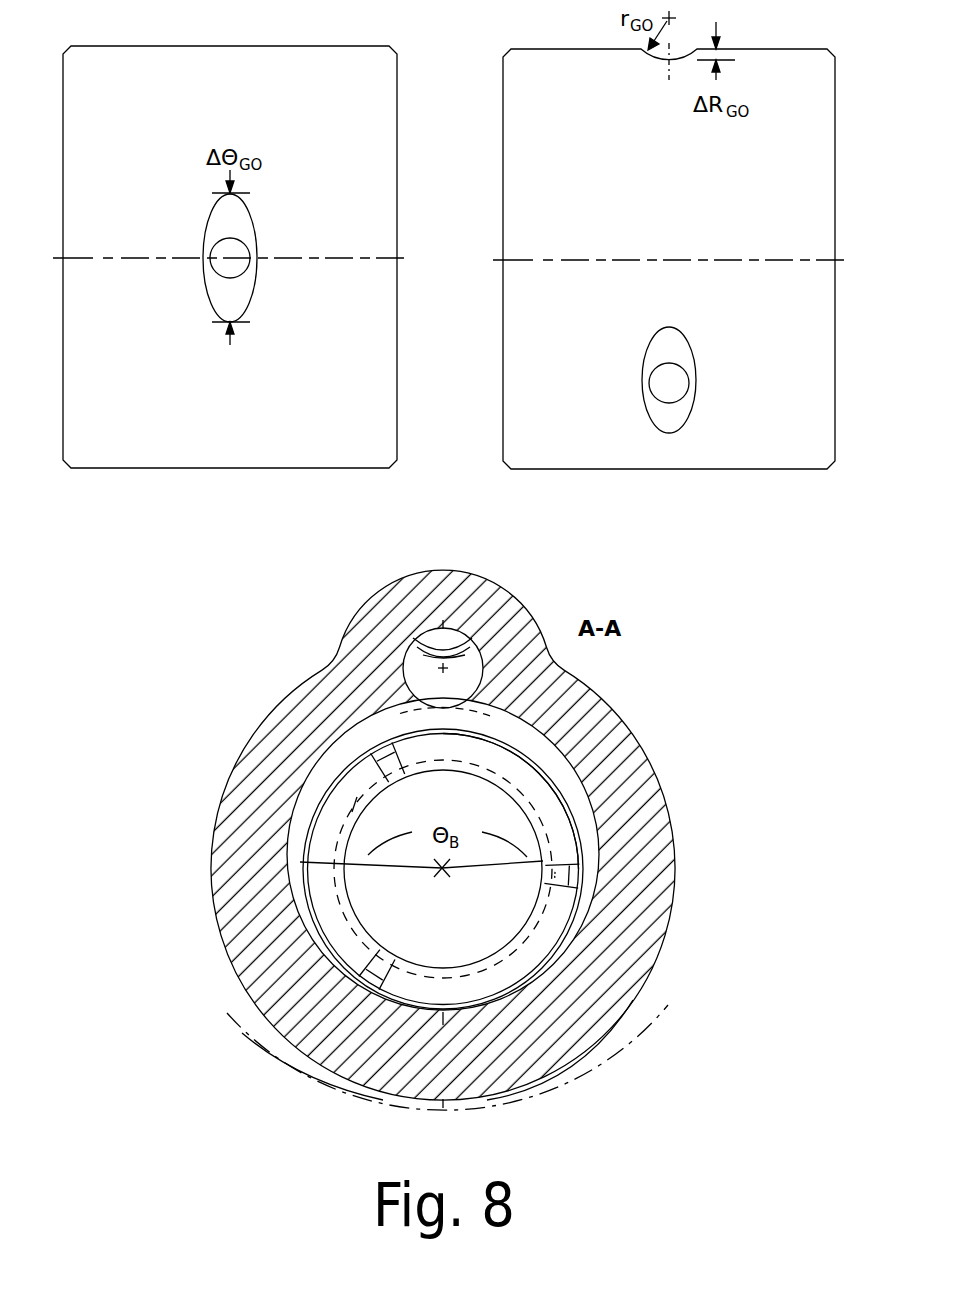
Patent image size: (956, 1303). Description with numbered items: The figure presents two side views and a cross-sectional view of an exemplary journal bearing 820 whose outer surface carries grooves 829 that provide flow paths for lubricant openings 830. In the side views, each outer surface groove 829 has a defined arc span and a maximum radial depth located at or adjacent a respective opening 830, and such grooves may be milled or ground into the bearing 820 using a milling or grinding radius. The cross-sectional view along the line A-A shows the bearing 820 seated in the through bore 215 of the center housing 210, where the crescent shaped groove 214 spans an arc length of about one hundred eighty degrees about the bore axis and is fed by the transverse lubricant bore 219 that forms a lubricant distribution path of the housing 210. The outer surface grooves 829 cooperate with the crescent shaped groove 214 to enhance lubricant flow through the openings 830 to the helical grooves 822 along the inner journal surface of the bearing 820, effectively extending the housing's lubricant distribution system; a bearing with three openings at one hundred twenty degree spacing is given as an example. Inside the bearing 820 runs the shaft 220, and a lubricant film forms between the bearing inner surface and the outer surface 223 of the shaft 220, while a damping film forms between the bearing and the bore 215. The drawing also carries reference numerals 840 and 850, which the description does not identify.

The center housing 210 is at (417, 576).
The crescent shaped groove 214 is at (420, 737).
The through bore 215 is at (393, 773).
The transverse lubricant bore 219 is at (433, 638).
The shaft 220 is at (347, 853).
The outer surface of the shaft 223 is at (300, 862).
The journal bearing 820 is at (220, 47).
The helical grooves 822 is at (357, 797).
The outer surface grooves 829 is at (208, 220).
The lubricant openings 830 is at (212, 268).
The outer sleeve 840 is at (413, 727).
The gap marker 850 is at (373, 790).